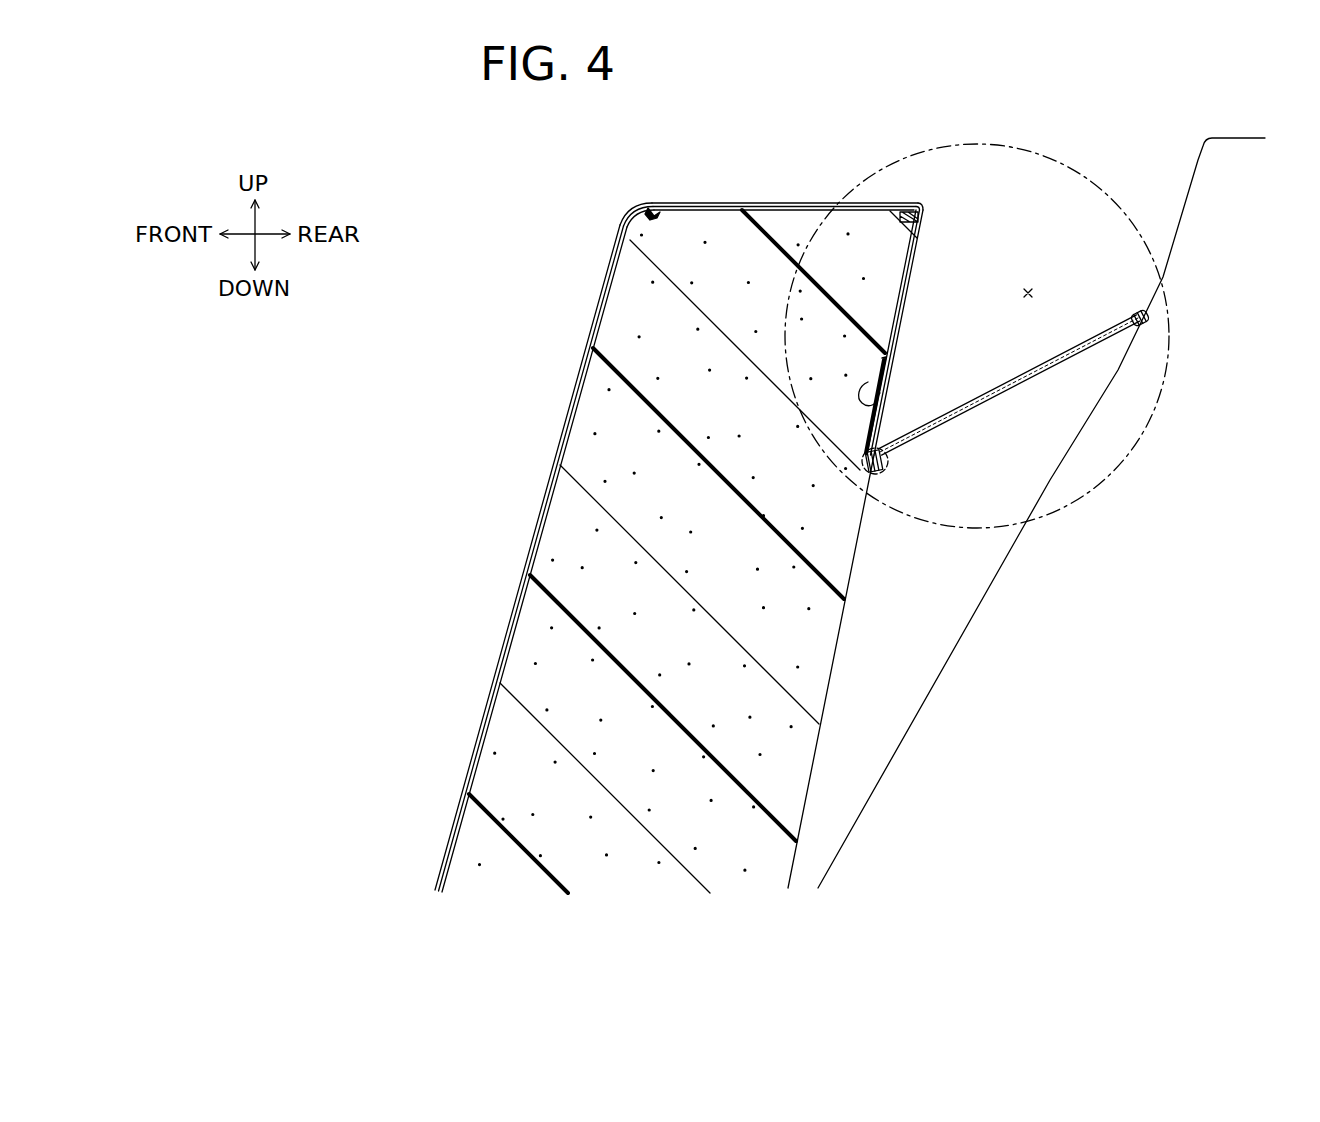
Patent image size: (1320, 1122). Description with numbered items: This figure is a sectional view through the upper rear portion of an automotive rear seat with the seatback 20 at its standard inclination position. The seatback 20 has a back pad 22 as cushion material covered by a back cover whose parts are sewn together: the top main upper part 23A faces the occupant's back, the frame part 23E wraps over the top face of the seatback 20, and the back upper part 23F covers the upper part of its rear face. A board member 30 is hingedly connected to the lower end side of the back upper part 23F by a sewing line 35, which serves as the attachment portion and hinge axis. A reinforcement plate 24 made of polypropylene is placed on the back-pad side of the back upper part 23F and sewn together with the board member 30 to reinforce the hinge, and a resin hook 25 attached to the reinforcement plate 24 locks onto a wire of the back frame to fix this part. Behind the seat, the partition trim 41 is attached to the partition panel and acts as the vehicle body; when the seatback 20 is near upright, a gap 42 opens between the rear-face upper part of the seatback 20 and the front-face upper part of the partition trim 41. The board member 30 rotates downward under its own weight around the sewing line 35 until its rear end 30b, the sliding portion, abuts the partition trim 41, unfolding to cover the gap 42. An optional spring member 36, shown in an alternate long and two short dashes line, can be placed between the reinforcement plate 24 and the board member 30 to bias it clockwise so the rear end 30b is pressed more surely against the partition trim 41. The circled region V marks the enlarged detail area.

The seatback 20 is at (717, 498).
The back pad 22 is at (598, 545).
The top main upper part 23A is at (575, 405).
The frame part 23E is at (790, 203).
The back upper part 23F is at (908, 297).
The reinforcement plate 24 is at (870, 420).
The hook 25 is at (887, 387).
The board member 30 is at (1064, 386).
The rear end 30b is at (1145, 322).
The sewing line 35 is at (884, 462).
The spring member 36 is at (885, 478).
The partition trim 41 is at (967, 623).
The gap 42 is at (1028, 288).
The enlarged view region V is at (1077, 167).